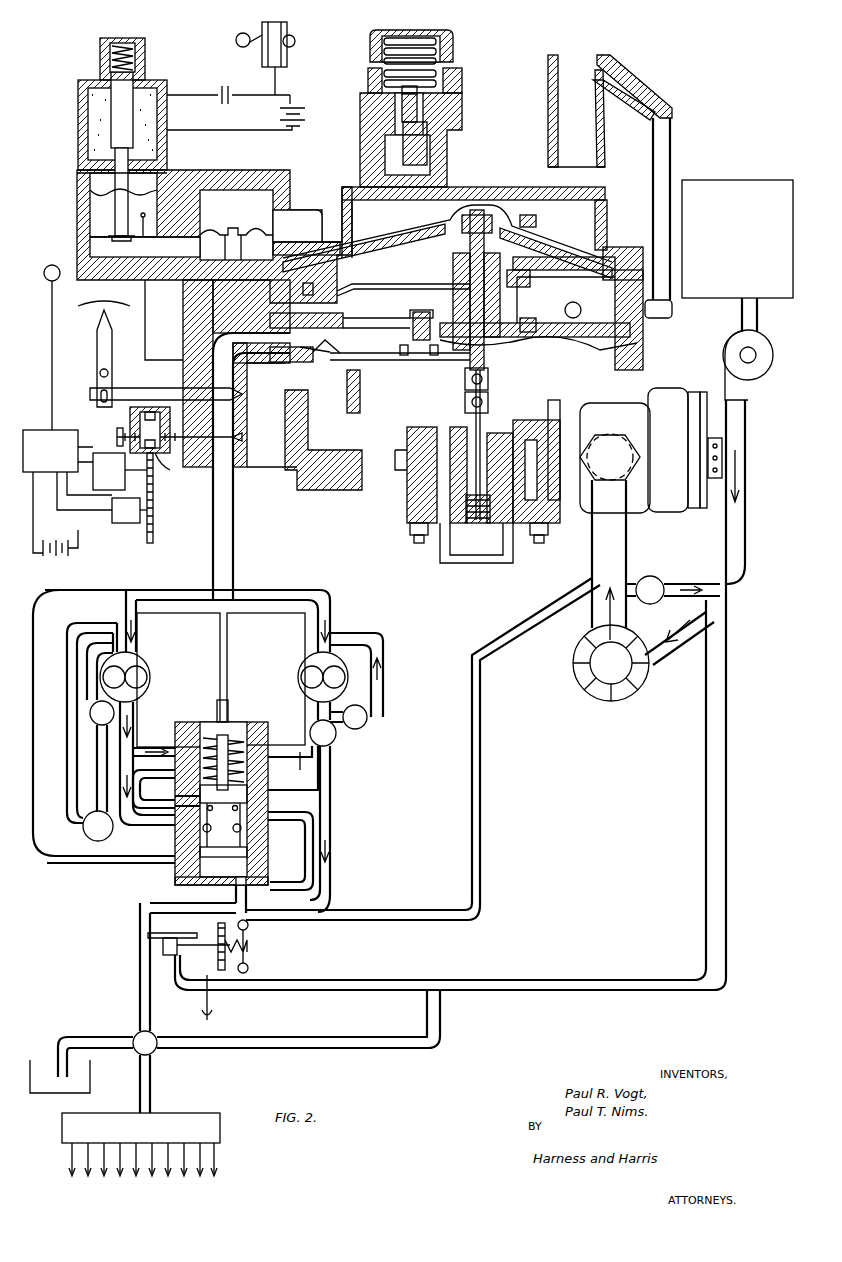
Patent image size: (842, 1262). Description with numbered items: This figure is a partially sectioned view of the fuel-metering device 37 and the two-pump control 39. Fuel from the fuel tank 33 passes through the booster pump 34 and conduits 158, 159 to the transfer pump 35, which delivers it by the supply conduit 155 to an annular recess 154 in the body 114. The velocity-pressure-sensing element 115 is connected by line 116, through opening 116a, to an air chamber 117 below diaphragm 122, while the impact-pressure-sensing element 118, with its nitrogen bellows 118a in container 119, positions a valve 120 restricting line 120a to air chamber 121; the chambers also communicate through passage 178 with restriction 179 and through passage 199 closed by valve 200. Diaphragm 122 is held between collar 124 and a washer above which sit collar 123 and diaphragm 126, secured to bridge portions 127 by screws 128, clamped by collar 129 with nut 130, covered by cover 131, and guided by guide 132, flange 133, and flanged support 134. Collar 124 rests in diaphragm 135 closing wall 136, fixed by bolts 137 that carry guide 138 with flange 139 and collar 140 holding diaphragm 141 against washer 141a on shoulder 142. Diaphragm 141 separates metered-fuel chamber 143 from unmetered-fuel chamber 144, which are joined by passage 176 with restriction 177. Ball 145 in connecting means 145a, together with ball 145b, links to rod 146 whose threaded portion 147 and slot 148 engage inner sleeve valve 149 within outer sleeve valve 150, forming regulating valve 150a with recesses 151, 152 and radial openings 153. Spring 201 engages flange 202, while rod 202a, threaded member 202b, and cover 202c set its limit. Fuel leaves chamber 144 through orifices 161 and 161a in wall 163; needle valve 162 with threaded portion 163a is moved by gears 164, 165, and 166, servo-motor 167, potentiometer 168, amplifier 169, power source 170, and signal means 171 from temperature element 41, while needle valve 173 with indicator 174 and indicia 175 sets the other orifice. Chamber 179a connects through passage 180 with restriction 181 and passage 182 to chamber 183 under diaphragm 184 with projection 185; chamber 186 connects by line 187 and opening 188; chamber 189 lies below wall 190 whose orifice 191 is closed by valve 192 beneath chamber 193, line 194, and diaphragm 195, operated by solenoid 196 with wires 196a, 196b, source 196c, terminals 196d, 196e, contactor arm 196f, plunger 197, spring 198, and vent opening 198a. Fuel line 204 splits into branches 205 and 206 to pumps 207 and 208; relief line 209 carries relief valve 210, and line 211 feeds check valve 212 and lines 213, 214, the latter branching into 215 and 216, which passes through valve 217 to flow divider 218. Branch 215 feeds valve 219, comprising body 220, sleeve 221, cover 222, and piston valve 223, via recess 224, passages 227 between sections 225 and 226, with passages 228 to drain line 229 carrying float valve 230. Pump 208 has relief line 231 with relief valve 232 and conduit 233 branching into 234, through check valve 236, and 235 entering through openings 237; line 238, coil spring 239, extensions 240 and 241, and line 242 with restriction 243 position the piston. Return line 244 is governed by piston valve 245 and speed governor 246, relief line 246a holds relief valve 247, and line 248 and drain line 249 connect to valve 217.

The fuel tank 33 is at (737, 185).
The booster pump 34 is at (772, 360).
The transfer pump 35 is at (573, 668).
The fuel-metering device 37 is at (537, 154).
The two-pump control 39 is at (246, 578).
The temperature-responsive element 41 is at (44, 273).
The body 114 is at (490, 212).
The velocity-pressure-sensing element 115 is at (598, 60).
The line 116 is at (672, 150).
The opening 116a is at (566, 300).
The air chamber 117 is at (376, 315).
The impact-pressure-sensing element 118 is at (462, 108).
The pressure-compensating nitrogen-filled bellows 118a is at (448, 45).
The container 119 is at (370, 50).
The valve 120 is at (430, 122).
The line 120a is at (399, 206).
The air chamber 121 is at (380, 213).
The diaphragm 122 is at (384, 275).
The collar 123 is at (415, 275).
The collar 124 is at (353, 293).
The diaphragm 126 is at (525, 280).
The bridge portions 127 is at (352, 258).
The screws 128 is at (400, 262).
The collar 129 is at (515, 222).
The nut 130 is at (492, 215).
The cover 131 is at (445, 224).
The guide 132 is at (557, 211).
The flange 133 is at (511, 318).
The flanged support 134 is at (567, 267).
The diaphragm 135 is at (540, 372).
The wall 136 is at (309, 348).
The bolts 137 is at (418, 324).
The guide 138 is at (590, 344).
The flange 139 is at (412, 362).
The collar 140 is at (445, 362).
The diaphragm 141 is at (395, 362).
The ribbed disk washer 141a is at (405, 380).
The shoulder 142 is at (500, 372).
The metered-fuel chamber 143 is at (225, 426).
The unmetered-fuel chamber 144 is at (408, 390).
The ball 145 is at (490, 382).
The connecting means 145a is at (490, 402).
The ball 145b is at (465, 405).
The rod 146 is at (475, 420).
The threaded portion 147 is at (484, 545).
The slot 148 is at (475, 540).
The movable inner sleeve valve 149 is at (452, 553).
The fixed outer sleeve valve 150 is at (515, 445).
The adjustable regulating valve 150a is at (452, 440).
The inner annular recess 151 is at (500, 460).
The outer annular recess 152 is at (548, 483).
The radial openings 153 is at (548, 496).
The annular recess 154 is at (410, 445).
The supply conduit 155 is at (625, 525).
The conduit 158 is at (748, 490).
The conduit 159 is at (660, 643).
The orifice 161 is at (240, 440).
The orifice 161a is at (200, 425).
The needle valve 162 is at (165, 460).
The wall 163 is at (91, 422).
The threaded portion 163a is at (120, 430).
The gear 164 is at (160, 470).
The gear 165 is at (158, 480).
The gear 166 is at (155, 520).
The servo-motor 167 is at (110, 452).
The potentiometer 168 is at (121, 521).
The amplifier 169 is at (40, 430).
The electrical source of power 170 is at (35, 560).
The means 171 is at (50, 358).
The needle valve 173 is at (115, 395).
The indicator 174 is at (112, 335).
The indicia 175 is at (104, 305).
The passage 176 is at (643, 345).
The restriction 177 is at (610, 340).
The passage 178 is at (563, 250).
The restriction 179 is at (592, 280).
The chamber 179a is at (473, 212).
The passage 180 is at (612, 248).
The restriction 181 is at (530, 222).
The passage 182 is at (380, 248).
The chamber 183 is at (302, 231).
The diaphragm 184 is at (250, 225).
The projection 185 is at (236, 246).
The chamber 186 is at (236, 190).
The line 187 is at (300, 210).
The opening 188 is at (347, 388).
The chamber 189 is at (90, 238).
The wall 190 is at (110, 232).
The orifice 191 is at (143, 230).
The valve 192 is at (115, 244).
The chamber 193 is at (172, 172).
The line 194 is at (190, 300).
The diaphragm 195 is at (78, 172).
The solenoid 196 is at (160, 86).
The wire 196a is at (290, 44).
The wire 196b is at (270, 135).
The source of electrical power 196c is at (305, 125).
The terminal 196d is at (230, 102).
The terminal 196e is at (225, 85).
The contactor arm 196f is at (280, 66).
The plunger 197 is at (135, 78).
The spring 198 is at (147, 52).
The opening 198a is at (90, 192).
The passage 199 is at (335, 310).
The valve 200 is at (251, 306).
The spring 201 is at (555, 373).
The flange 202 is at (465, 396).
The rod 202a is at (585, 500).
The threaded member 202b is at (645, 375).
The removable cover 202c is at (585, 437).
The fuel line 204 is at (234, 508).
The branch 205 is at (340, 492).
The branch 206 is at (162, 610).
The pump 207 is at (348, 663).
The pump 208 is at (146, 680).
The relief line 209 is at (345, 636).
The relief valve 210 is at (365, 727).
The line 211 is at (315, 714).
The check valve 212 is at (340, 745).
The line 213 is at (310, 770).
The line 214 is at (335, 775).
The branch 215 is at (280, 808).
The branch 216 is at (333, 852).
The valve 217 is at (130, 1035).
The flow divider 218 is at (182, 1113).
The valve 219 is at (228, 710).
The body 220 is at (258, 848).
The sleeve 221 is at (258, 836).
The cover 222 is at (165, 893).
The balanced piston valve 223 is at (262, 862).
The annular recess 224 is at (178, 790).
The section 225 is at (232, 800).
The section 226 is at (175, 853).
The passages 227 is at (175, 810).
The passages 228 is at (205, 830).
The drain line 229 is at (60, 860).
The float valve 230 is at (97, 812).
The relief line 231 is at (85, 722).
The relief valve 232 is at (85, 703).
The conduit 233 is at (160, 706).
The branch 234 is at (154, 784).
The branch 235 is at (120, 763).
The check valve 236 is at (310, 730).
The openings 237 is at (250, 820).
The line 238 is at (240, 624).
The coil spring 239 is at (175, 745).
The extension 240 is at (230, 722).
The short extension 241 is at (175, 871).
The line 242 is at (272, 930).
The restriction 243 is at (296, 915).
The return line 244 is at (706, 788).
The piston valve 245 is at (175, 935).
The speed governor 246 is at (258, 955).
The relief line 246a is at (712, 590).
The relief valve 247 is at (648, 577).
The line 248 is at (315, 1020).
The drain line 249 is at (95, 1060).